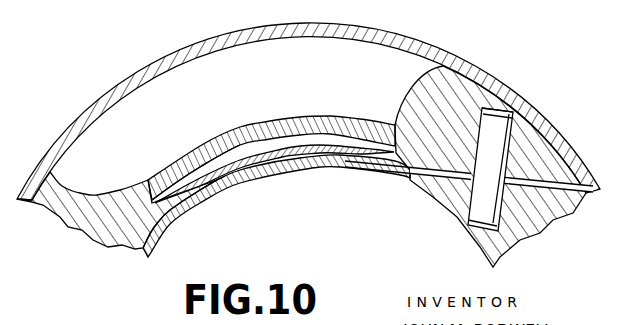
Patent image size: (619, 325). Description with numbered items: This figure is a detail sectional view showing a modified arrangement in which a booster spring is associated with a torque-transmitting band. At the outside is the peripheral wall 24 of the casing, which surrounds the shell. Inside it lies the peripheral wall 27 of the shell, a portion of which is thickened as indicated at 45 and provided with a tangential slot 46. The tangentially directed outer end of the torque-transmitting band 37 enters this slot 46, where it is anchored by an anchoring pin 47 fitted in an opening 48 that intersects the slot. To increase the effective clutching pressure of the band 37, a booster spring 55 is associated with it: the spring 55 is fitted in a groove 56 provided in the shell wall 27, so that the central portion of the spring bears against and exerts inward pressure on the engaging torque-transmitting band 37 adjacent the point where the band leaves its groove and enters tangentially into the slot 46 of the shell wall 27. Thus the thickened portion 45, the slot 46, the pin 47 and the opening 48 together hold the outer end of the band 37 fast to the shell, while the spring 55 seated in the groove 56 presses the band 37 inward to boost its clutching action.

The peripheral wall 24 is at (396, 42).
The thickened portion 45 is at (64, 183).
The peripheral wall 27 is at (220, 134).
The booster spring 55 is at (282, 149).
The torque-transmitting band 37 is at (266, 176).
The groove 56 is at (220, 155).
The tangential slot 46 is at (443, 184).
The anchoring pin 47 is at (491, 143).
The opening 48 is at (489, 101).